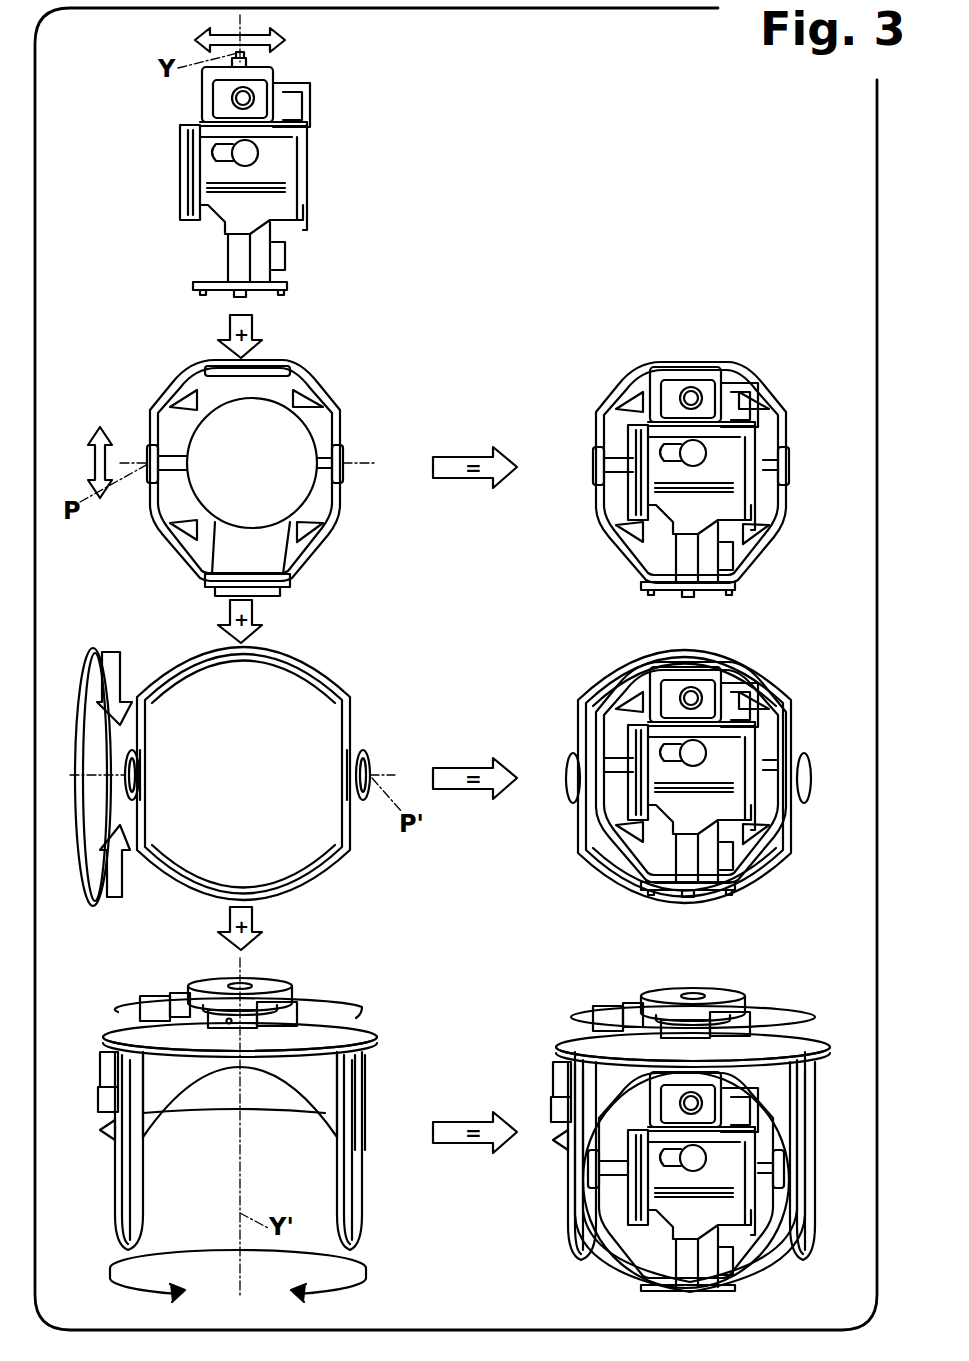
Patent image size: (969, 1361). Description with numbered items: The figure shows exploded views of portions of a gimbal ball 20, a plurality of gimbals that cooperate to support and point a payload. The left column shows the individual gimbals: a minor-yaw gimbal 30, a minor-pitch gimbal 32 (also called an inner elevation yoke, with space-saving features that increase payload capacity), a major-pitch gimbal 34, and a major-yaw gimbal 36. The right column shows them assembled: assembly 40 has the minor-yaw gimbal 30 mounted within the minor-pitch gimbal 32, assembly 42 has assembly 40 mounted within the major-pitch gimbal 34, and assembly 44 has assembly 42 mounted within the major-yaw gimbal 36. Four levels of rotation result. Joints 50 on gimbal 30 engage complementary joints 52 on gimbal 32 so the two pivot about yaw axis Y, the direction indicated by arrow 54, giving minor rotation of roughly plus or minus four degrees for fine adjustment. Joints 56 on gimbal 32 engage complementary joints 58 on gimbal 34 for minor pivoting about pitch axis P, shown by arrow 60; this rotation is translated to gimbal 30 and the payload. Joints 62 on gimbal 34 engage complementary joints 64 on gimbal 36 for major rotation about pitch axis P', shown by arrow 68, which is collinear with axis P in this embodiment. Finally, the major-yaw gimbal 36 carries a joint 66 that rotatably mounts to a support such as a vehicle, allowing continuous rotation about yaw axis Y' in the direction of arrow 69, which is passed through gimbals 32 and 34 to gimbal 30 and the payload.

The gimbal ball 20 is at (622, 112).
The minor-yaw gimbal 30 is at (177, 166).
The minor-pitch gimbal 32 is at (143, 388).
The major-pitch gimbal 34 is at (137, 630).
The major-yaw gimbal 36 is at (133, 992).
The assembly 40 is at (772, 352).
The assembly 42 is at (772, 652).
The assembly 44 is at (772, 980).
The joints 50 is at (250, 55).
The complementary joints 52 is at (240, 380).
The arrow 54 is at (228, 34).
The joints 56 is at (147, 470).
The complementary joints 58 is at (144, 778).
The arrow 60 is at (97, 442).
The joints 62 is at (126, 763).
The complementary joints 64 is at (148, 1188).
The joint 66 is at (299, 991).
The arrow 68 is at (78, 708).
The arrow 69 is at (366, 1274).